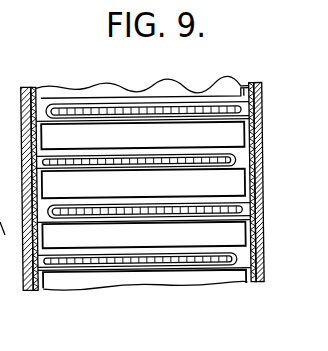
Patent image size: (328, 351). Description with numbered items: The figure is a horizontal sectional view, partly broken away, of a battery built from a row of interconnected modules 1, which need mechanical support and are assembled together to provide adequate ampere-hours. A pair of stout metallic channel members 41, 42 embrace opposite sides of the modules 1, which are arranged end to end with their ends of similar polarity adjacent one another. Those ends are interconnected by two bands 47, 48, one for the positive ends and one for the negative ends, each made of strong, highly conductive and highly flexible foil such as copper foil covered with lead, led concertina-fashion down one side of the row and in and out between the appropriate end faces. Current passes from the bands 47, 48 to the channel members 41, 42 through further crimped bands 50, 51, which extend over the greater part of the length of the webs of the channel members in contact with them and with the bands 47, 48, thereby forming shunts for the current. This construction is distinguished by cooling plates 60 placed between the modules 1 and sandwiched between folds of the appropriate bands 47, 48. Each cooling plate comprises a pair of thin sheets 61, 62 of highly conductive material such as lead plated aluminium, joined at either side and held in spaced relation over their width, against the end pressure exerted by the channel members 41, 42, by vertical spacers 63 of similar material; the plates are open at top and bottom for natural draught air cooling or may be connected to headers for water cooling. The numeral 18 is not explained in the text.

The module 1 is at (252, 147).
The side element 18 is at (0, 125).
The channel member 41 is at (33, 293).
The channel member 42 is at (31, 293).
The band 47 is at (118, 253).
The band 48 is at (218, 115).
The band 50 is at (44, 284).
The band 51 is at (245, 285).
The cooling plate 60 is at (153, 109).
The thin sheet 61 is at (143, 258).
The thin sheet 62 is at (208, 265).
The vertical spacer 63 is at (167, 262).